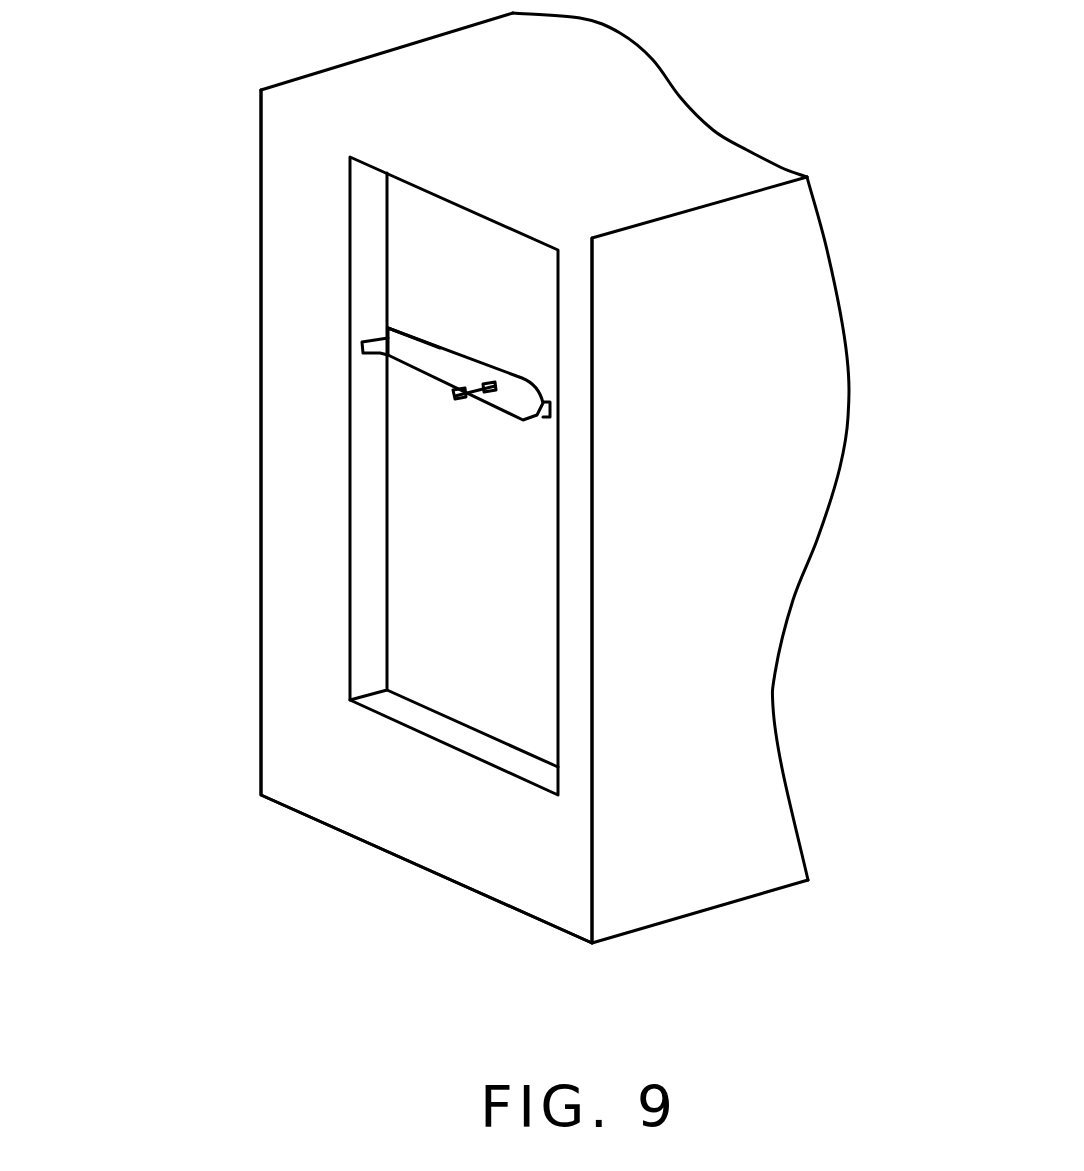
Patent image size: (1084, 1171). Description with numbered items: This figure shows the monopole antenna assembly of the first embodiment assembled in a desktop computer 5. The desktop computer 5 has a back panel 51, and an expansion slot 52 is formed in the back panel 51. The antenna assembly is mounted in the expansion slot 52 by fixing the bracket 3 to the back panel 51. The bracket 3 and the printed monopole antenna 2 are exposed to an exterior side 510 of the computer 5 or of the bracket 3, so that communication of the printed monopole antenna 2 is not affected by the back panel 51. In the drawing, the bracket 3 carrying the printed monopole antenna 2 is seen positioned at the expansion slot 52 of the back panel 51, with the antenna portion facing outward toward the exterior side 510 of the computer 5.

The printed monopole antenna 2 is at (460, 393).
The bracket 3 is at (422, 358).
The desktop computer 5 is at (283, 427).
The back panel 51 is at (298, 615).
The exterior side 510 is at (412, 662).
The expansion slot 52 is at (512, 405).